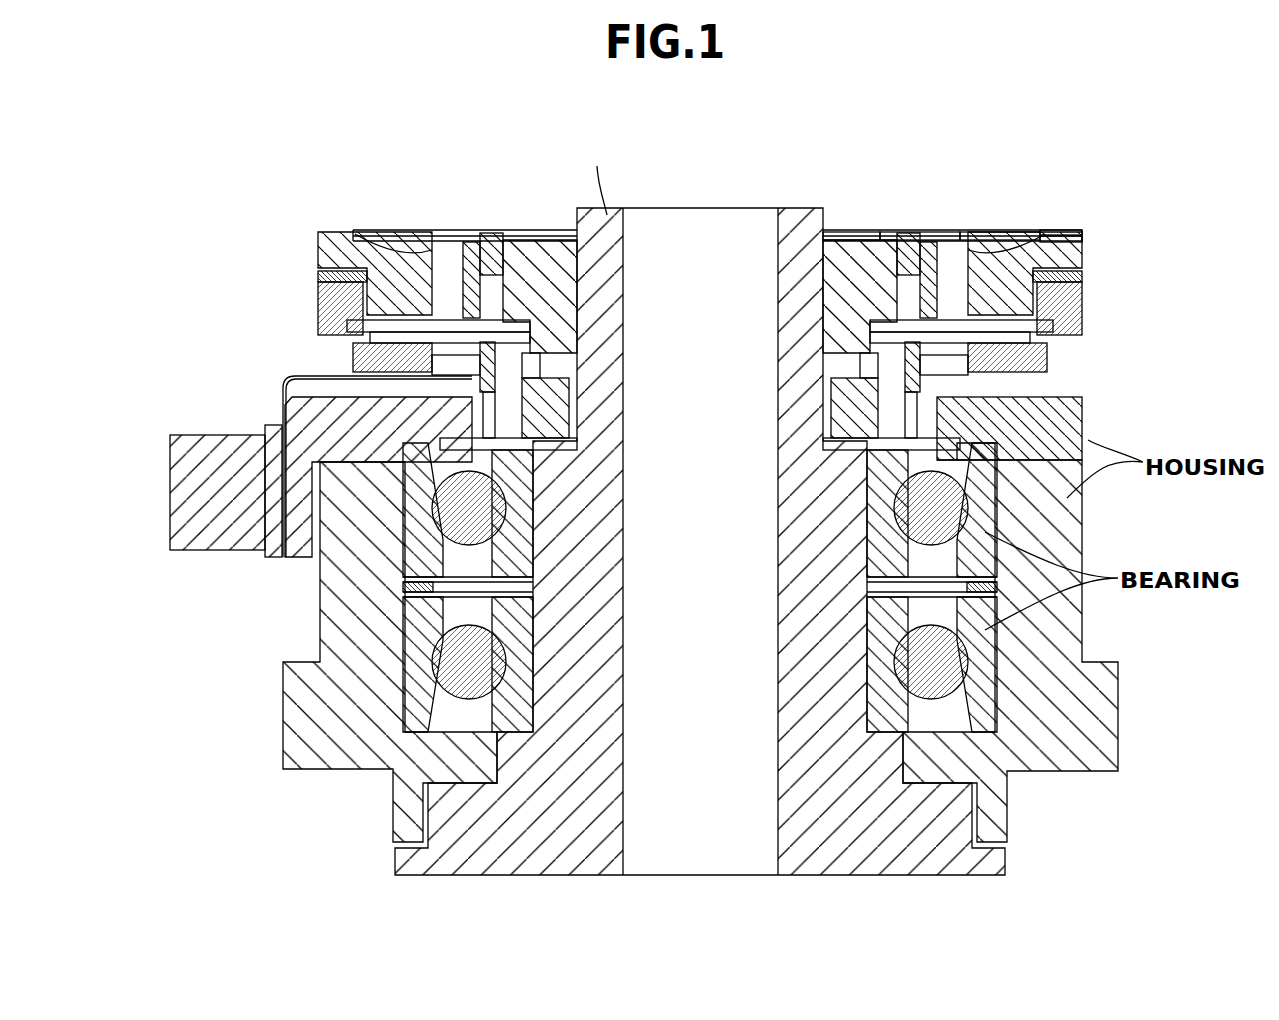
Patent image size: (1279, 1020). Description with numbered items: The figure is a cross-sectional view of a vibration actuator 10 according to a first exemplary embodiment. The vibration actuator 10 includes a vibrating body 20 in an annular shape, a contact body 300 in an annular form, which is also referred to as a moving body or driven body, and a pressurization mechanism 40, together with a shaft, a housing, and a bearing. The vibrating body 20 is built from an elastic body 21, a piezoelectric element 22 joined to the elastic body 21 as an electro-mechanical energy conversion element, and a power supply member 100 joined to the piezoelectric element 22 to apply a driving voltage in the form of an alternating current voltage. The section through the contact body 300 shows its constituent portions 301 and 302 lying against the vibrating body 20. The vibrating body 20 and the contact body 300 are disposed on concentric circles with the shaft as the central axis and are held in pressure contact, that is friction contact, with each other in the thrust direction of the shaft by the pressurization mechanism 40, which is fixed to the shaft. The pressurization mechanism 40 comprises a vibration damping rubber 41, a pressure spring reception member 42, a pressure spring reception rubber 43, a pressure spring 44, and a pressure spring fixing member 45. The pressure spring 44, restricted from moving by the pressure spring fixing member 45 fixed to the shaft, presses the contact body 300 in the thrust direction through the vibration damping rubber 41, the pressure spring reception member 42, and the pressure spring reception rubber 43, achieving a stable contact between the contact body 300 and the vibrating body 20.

The vibration actuator 10 is at (376, 134).
The vibrating body 20 is at (157, 275).
The elastic body 21 is at (353, 355).
The piezoelectric element 22 is at (353, 373).
The power supply member 100 is at (280, 380).
The contact body 300 is at (157, 165).
The stator core 301 is at (322, 290).
The coil 302 is at (340, 300).
The pressurization mechanism 40 is at (1128, 132).
The vibration damping rubber 41 is at (1080, 230).
The pressure spring reception member 42 is at (1080, 230).
The pressure spring reception rubber 43 is at (1022, 230).
The pressure spring 44 is at (948, 230).
The pressure spring fixing member 45 is at (865, 230).